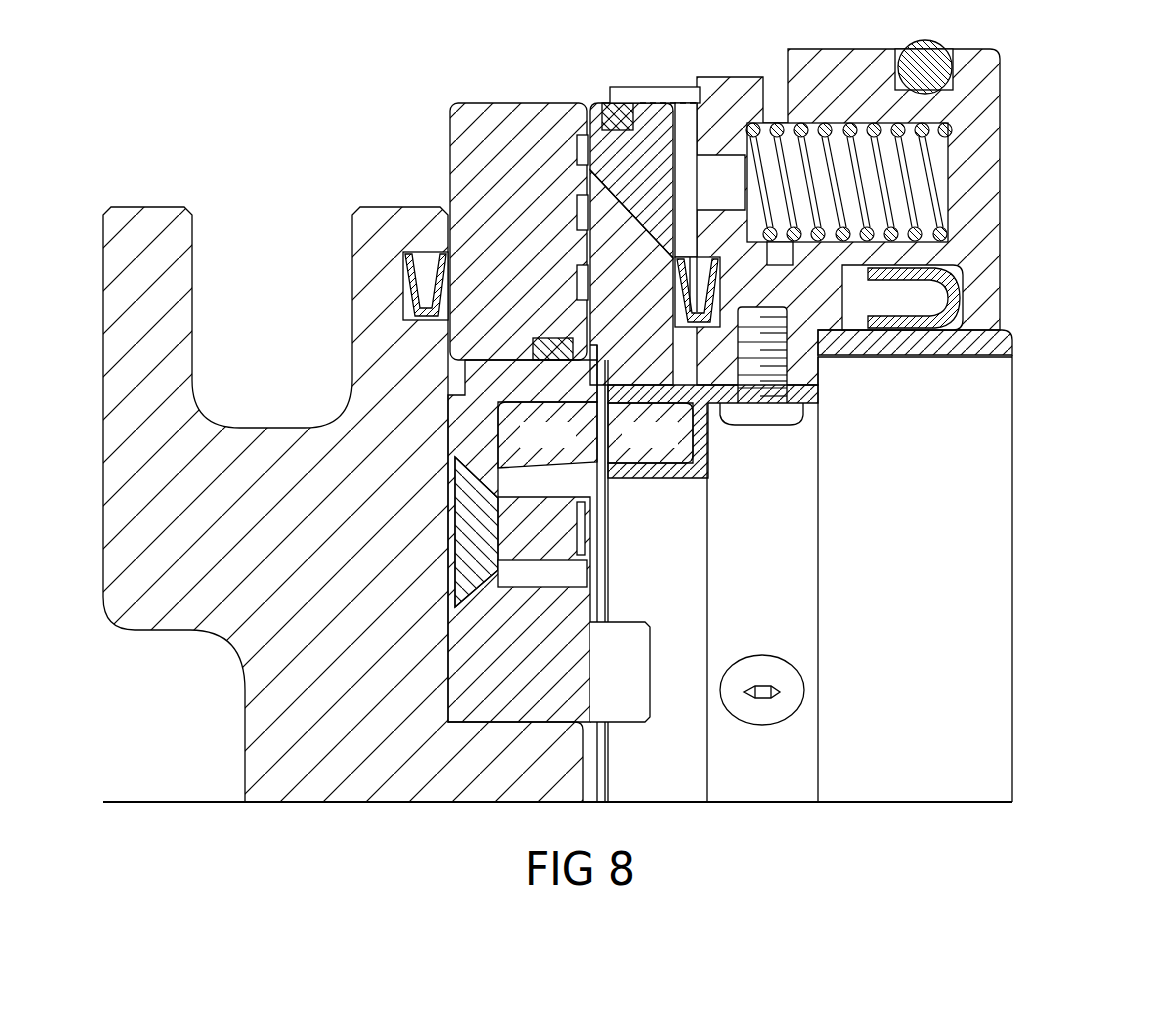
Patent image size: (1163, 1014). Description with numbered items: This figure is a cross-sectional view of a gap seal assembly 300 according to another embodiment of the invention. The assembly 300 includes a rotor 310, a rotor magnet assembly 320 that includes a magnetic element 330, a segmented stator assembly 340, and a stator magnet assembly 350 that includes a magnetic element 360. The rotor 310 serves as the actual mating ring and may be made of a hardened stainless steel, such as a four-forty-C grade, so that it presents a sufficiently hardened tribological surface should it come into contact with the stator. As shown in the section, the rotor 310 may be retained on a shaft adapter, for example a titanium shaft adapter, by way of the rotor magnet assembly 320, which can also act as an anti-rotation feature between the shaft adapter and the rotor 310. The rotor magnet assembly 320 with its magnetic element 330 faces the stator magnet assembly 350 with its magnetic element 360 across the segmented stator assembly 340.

The gap seal assembly 300 is at (1033, 118).
The rotor 310 is at (449, 166).
The rotor magnet assembly 320 is at (447, 408).
The magnetic element 330 is at (507, 445).
The segmented stator assembly 340 is at (652, 118).
The stator magnet assembly 350 is at (712, 439).
The magnetic element 360 is at (693, 458).